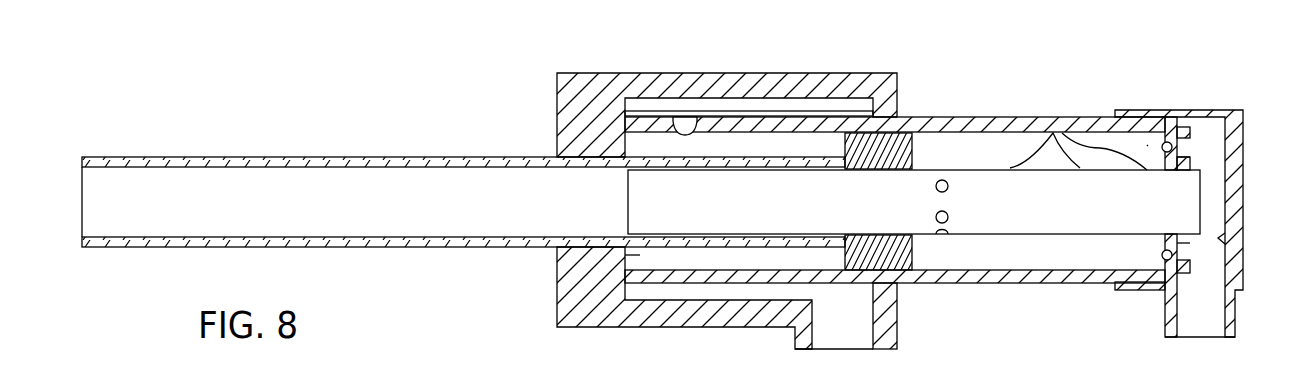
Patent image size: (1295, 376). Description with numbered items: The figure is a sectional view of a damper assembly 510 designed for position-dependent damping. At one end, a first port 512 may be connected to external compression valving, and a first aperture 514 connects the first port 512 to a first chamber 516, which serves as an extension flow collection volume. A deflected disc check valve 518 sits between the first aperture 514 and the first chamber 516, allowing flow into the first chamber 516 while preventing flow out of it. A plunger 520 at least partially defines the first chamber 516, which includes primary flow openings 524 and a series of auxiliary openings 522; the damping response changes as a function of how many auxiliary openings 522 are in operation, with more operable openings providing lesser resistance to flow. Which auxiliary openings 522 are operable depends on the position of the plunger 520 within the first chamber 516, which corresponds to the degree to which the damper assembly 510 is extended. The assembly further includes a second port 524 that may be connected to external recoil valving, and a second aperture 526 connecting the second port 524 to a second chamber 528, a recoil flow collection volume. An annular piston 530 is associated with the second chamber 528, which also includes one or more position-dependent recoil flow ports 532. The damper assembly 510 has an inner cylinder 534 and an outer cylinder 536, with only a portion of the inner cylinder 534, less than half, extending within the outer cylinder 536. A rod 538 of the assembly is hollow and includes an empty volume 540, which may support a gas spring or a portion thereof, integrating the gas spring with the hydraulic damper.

The damper assembly 510 is at (366, 116).
The first port 512 is at (1188, 342).
The first aperture 514 is at (1229, 242).
The first chamber 516 is at (1147, 145).
The deflected disc check valve 518 is at (1187, 138).
The plunger 520 is at (629, 203).
The auxiliary openings 522 is at (1059, 132).
The second port 524 is at (949, 214).
The second aperture 526 is at (723, 294).
The second chamber 528 is at (637, 255).
The annular piston 530 is at (913, 254).
The position-dependent recoil flow ports 532 is at (690, 126).
The inner cylinder 534 is at (1045, 283).
The outer cylinder 536 is at (637, 324).
The rod 538 is at (438, 246).
The empty volume 540 is at (247, 190).